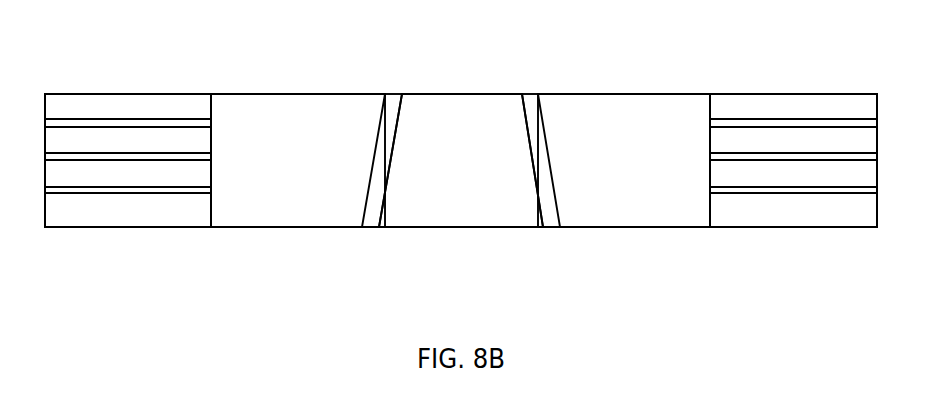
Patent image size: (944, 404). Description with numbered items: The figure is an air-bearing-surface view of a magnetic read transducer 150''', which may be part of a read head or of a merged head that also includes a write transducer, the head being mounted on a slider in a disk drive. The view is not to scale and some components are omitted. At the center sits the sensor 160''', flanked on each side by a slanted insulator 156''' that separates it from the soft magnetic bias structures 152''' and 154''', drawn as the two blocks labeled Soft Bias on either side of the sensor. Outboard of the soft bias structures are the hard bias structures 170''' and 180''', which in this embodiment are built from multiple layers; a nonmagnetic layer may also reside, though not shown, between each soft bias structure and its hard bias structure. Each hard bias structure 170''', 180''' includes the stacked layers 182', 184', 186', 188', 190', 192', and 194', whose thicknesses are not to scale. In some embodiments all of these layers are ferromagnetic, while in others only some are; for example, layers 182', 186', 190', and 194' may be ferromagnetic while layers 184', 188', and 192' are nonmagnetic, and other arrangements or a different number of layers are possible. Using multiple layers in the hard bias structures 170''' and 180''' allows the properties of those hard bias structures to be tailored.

The magnetic read transducer 150''' is at (461, 119).
The soft magnetic bias structure 152''' is at (624, 182).
The soft magnetic bias structure 154''' is at (298, 183).
The insulator 156''' is at (461, 199).
The sensor 160''' is at (461, 183).
The hard bias structure 170''' is at (793, 214).
The hard bias structure 180''' is at (128, 216).
The layer 182' is at (461, 216).
The layer 184' is at (461, 250).
The layer 186' is at (460, 233).
The layer 188' is at (461, 234).
The layer 190' is at (461, 91).
The layer 192' is at (461, 92).
The layer 194' is at (461, 84).